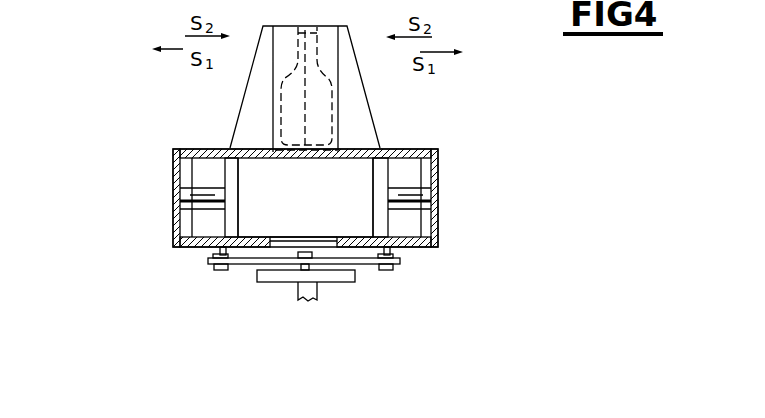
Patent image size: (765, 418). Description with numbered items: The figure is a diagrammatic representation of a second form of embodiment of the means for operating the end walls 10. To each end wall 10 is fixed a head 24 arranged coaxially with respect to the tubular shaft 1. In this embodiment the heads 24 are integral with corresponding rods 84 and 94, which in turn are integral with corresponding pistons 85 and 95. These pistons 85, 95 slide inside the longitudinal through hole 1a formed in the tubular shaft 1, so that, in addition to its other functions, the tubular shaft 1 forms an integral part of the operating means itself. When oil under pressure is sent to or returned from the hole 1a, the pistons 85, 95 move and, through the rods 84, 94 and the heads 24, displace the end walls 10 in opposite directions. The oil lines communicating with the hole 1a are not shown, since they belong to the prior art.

The end wall 10 is at (470, 104).
The head 24 is at (488, 165).
The tubular shaft 1 is at (310, 158).
The longitudinal through hole 1a is at (353, 211).
The rod 84 is at (202, 207).
The piston 85 is at (228, 220).
The rod 94 is at (423, 208).
The piston 95 is at (380, 213).